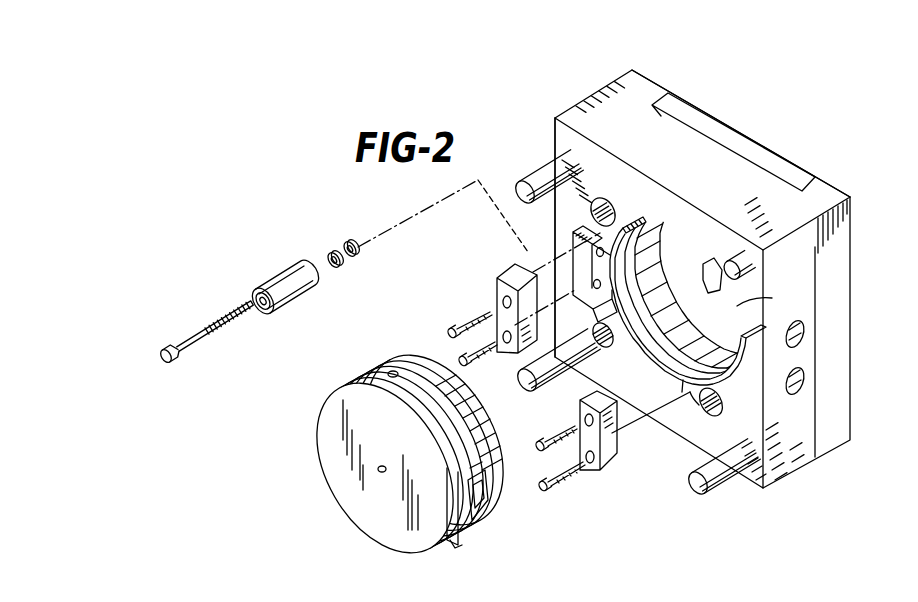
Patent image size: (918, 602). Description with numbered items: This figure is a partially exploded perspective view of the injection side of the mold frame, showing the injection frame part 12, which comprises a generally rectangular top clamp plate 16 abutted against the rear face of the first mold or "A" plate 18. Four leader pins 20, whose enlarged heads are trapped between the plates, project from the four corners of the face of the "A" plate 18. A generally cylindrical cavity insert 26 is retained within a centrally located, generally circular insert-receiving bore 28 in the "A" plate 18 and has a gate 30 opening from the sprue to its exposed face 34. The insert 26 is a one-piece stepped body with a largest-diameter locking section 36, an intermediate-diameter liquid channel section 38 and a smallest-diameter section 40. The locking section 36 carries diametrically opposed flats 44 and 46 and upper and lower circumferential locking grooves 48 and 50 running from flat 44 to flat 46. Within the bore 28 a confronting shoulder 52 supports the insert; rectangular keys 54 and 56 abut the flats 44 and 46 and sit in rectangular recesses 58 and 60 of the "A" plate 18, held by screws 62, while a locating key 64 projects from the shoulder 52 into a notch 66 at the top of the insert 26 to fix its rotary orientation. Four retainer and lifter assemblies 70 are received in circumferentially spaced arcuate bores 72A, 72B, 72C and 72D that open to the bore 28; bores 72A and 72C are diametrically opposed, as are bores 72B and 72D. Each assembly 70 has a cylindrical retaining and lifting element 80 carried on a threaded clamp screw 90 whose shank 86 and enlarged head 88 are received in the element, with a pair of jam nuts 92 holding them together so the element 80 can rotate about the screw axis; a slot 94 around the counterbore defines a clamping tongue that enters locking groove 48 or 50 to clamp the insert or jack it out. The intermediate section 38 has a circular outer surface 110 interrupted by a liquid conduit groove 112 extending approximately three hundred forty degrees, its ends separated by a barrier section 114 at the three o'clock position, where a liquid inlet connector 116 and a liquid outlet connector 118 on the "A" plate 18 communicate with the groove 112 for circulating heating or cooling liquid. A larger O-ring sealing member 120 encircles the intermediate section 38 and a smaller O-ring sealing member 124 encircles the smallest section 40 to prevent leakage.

The injection frame part 12 is at (731, 118).
The top clamp plate 16 is at (636, 77).
The "A" plate 18 is at (577, 110).
The leader pins 20 is at (540, 174).
The cavity insert 26 is at (397, 443).
The cavity insert-receiving bore 28 is at (682, 392).
The gate 30 is at (380, 472).
The exposed face 34 is at (363, 510).
The locking section 36 is at (413, 440).
The liquid channel section 38 is at (482, 524).
The smallest diameter section 40 is at (476, 386).
The flat 44 is at (318, 424).
The flat 46 is at (458, 522).
The upper locking groove 48 is at (330, 386).
The lower locking groove 50 is at (455, 532).
The shoulder 52 is at (699, 405).
The rectangular key 54 is at (497, 282).
The rectangular key 56 is at (614, 452).
The recess 58 is at (573, 250).
The recess 60 is at (740, 313).
The screws 62 is at (474, 348).
The locating key 64 is at (683, 217).
The notch 66 is at (390, 370).
The insert retainer and lifter assembly 70 is at (239, 286).
The arcuate bore 72A is at (601, 208).
The arcuate bore 72B is at (708, 243).
The arcuate bore 72C is at (719, 411).
The arcuate bore 72D is at (557, 389).
The retaining and lifting element 80 is at (263, 268).
The shank 86 is at (229, 333).
The enlarged head portion 88 is at (166, 350).
The threaded clamp screw 90 is at (185, 331).
The jam nuts 92 is at (347, 243).
The slot 94 is at (256, 285).
The circular outer surface 110 is at (478, 432).
The liquid conduit groove 112 is at (410, 362).
The barrier section 114 is at (485, 490).
The liquid inlet connector 116 is at (805, 334).
The liquid outlet connector 118 is at (805, 377).
The first O-ring sealing member 120 is at (476, 480).
The second O-ring sealing member 124 is at (431, 360).